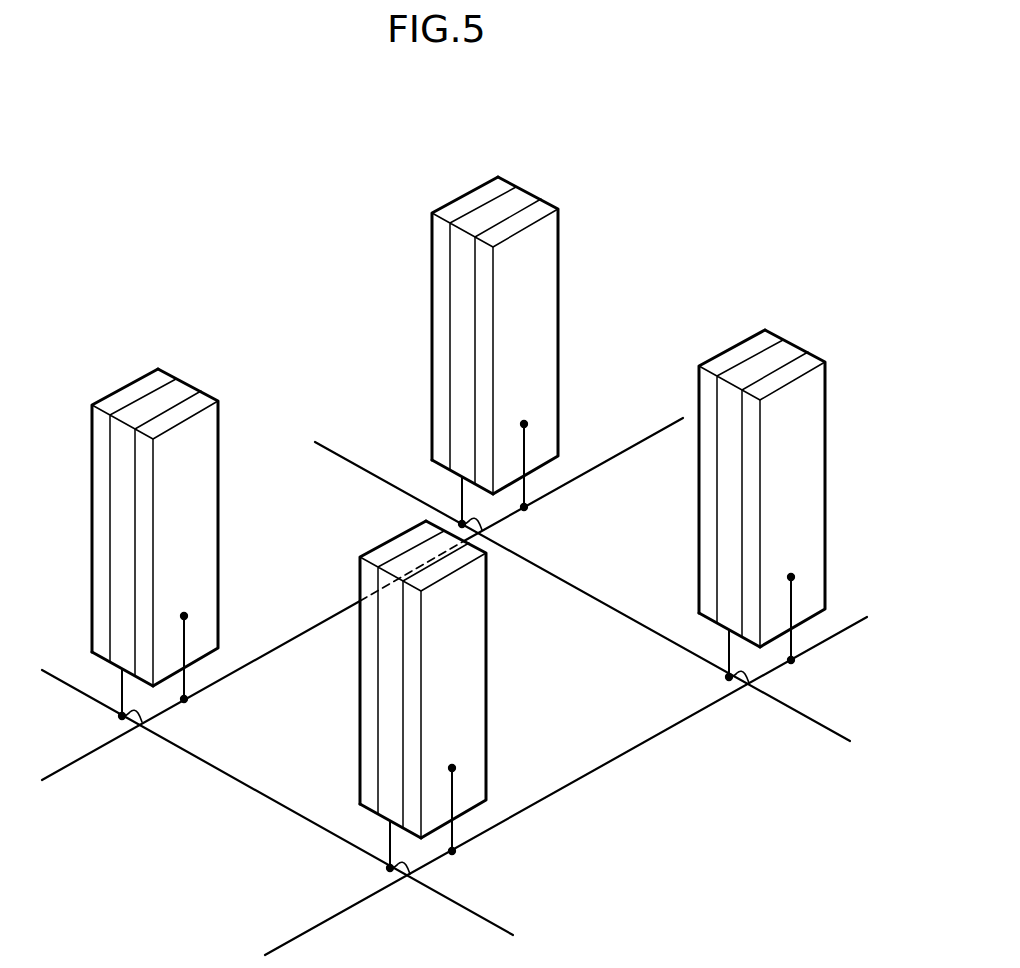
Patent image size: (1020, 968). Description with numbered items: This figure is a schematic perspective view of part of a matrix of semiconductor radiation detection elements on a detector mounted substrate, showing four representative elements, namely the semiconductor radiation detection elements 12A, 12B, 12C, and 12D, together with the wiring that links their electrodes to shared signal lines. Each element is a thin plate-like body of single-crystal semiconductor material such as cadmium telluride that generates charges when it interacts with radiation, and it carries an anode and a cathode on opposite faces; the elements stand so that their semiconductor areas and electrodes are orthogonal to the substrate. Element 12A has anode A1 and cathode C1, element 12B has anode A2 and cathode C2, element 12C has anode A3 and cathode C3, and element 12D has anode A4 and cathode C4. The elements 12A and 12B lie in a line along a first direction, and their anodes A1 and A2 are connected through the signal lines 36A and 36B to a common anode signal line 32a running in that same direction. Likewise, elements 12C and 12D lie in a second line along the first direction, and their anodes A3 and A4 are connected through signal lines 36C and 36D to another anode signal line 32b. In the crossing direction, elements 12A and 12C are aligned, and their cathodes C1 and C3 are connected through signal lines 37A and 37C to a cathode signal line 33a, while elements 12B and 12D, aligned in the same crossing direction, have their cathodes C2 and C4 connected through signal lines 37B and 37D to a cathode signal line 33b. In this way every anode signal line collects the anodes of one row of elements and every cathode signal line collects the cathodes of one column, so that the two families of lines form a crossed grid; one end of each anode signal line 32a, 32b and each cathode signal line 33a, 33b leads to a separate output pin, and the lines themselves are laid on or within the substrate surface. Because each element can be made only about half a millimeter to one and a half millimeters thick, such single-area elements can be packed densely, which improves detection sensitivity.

The semiconductor radiation detection element 12A is at (497, 298).
The semiconductor radiation detection element 12B is at (764, 452).
The semiconductor radiation detection element 12C is at (158, 492).
The semiconductor radiation detection element 12D is at (430, 659).
The anode A1 is at (445, 211).
The cathode C1 is at (542, 207).
The anode A2 is at (712, 366).
The cathode C2 is at (810, 362).
The anode A3 is at (105, 405).
The cathode C3 is at (202, 398).
The anode A4 is at (372, 556).
The cathode C4 is at (467, 557).
The signal line 36A is at (461, 497).
The signal line 37A is at (527, 445).
The signal line 36B is at (728, 650).
The signal line 37B is at (793, 597).
The signal line 36C is at (121, 690).
The signal line 37C is at (186, 638).
The signal line 36D is at (388, 847).
The signal line 37D is at (453, 790).
The anode signal line 32a is at (575, 587).
The anode signal line 32b is at (230, 775).
The cathode signal line 33a is at (299, 636).
The cathode signal line 33b is at (612, 762).